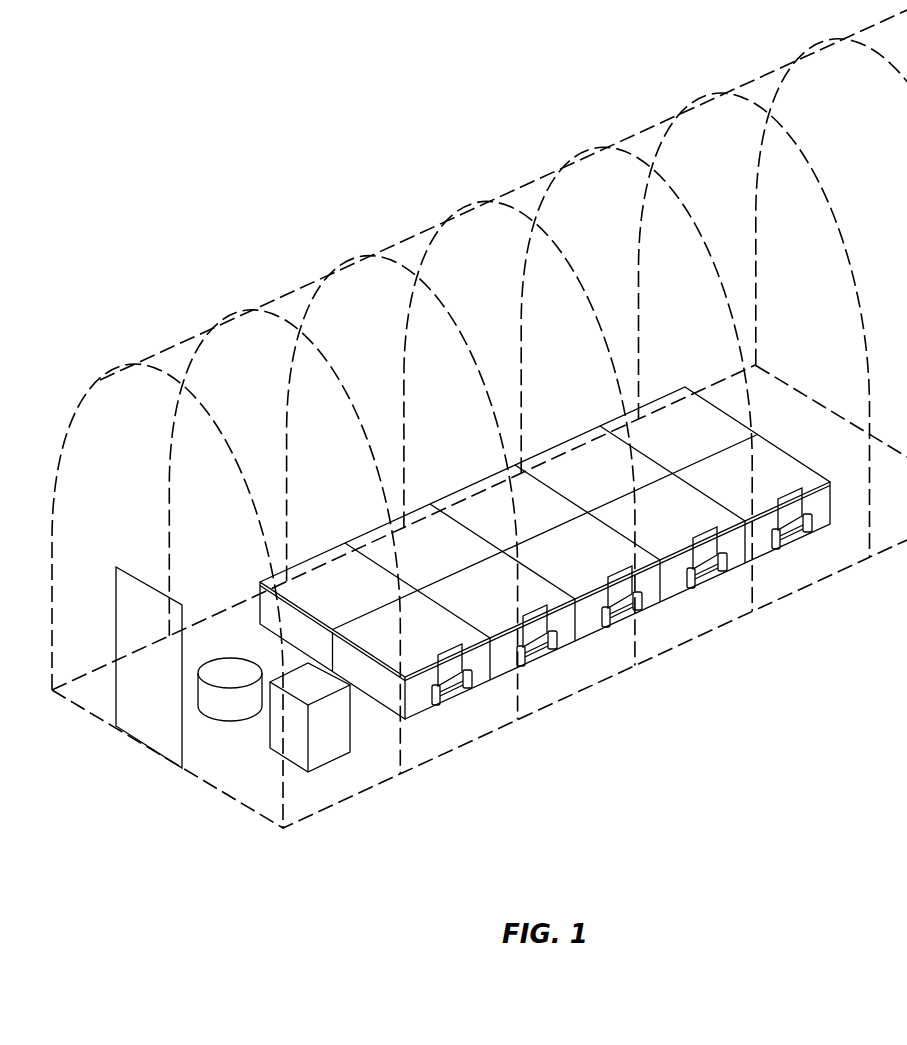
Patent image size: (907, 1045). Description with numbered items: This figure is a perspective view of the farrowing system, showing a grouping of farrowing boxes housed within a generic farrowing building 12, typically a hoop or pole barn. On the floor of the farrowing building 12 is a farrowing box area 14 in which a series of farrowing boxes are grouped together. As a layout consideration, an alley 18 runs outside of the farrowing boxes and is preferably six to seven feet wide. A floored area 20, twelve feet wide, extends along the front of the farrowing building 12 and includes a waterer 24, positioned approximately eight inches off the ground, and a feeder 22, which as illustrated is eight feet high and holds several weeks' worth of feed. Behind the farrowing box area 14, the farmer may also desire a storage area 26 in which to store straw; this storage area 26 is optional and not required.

The farrowing building 12 is at (430, 228).
The farrowing box area 14 is at (685, 604).
The alley 18 is at (743, 588).
The floored area 20 is at (337, 785).
The feeder 22 is at (338, 712).
The waterer 24 is at (197, 692).
The storage area 26 is at (793, 412).